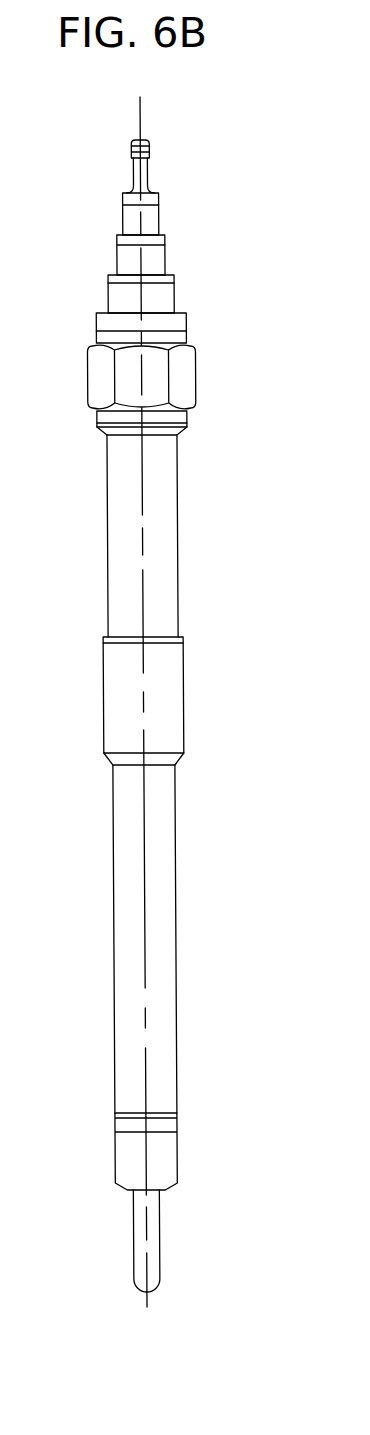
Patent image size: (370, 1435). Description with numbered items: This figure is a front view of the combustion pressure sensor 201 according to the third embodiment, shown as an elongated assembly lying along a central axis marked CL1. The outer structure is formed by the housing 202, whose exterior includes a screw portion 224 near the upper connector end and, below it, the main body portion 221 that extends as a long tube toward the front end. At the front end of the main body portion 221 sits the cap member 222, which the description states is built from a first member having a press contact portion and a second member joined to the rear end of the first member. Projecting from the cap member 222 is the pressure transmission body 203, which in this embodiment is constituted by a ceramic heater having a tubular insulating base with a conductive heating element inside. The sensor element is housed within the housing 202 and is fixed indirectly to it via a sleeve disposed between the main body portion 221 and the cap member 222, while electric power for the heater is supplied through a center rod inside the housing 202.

The center line (axis) of glow plug CL1 is at (140, 123).
The combustion pressure sensor 201 is at (238, 292).
The housing 202 is at (177, 523).
The screw portion 224 is at (103, 678).
The main body portion 221 is at (177, 974).
The cap member 222 is at (177, 1167).
The pressure transmission body 203 is at (160, 1217).